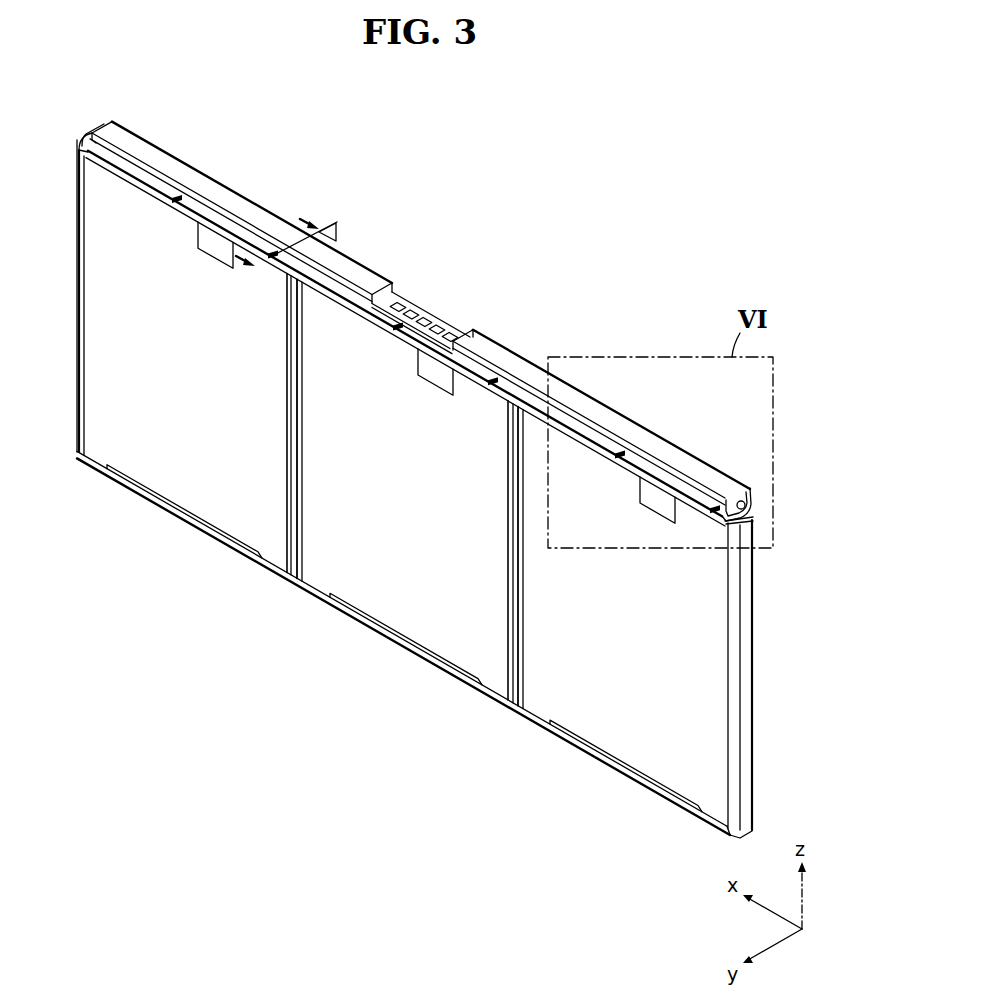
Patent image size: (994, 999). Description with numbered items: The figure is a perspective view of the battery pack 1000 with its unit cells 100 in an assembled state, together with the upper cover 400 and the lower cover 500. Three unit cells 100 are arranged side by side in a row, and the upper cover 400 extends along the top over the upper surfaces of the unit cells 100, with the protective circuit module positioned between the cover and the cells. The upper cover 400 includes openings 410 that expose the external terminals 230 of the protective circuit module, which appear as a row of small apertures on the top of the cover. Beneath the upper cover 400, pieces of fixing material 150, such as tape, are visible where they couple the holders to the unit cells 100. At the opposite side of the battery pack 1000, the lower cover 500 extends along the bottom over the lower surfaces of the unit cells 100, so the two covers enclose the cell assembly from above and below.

The battery pack 1000 is at (719, 127).
The unit cell 100 is at (184, 463).
The fixing material 150 is at (655, 506).
The external terminals 230 is at (433, 312).
The upper cover 400 is at (522, 352).
The openings 410 is at (400, 297).
The lower cover 500 is at (668, 797).